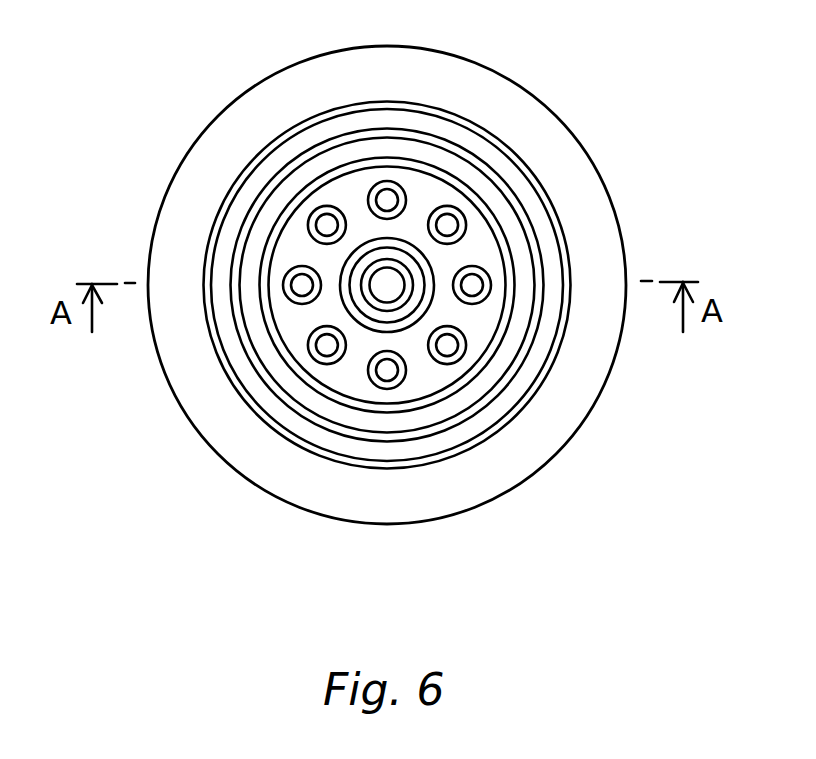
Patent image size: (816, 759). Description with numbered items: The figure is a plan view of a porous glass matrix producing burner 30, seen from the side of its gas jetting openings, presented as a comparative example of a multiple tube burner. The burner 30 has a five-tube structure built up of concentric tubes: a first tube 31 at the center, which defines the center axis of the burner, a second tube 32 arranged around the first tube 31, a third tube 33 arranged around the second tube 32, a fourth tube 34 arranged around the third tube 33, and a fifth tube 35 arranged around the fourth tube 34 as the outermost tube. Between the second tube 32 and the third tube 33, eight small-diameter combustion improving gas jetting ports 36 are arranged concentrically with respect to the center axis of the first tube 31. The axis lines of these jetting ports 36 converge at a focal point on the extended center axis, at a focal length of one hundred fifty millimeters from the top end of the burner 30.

The porous glass matrix producing burner 30 is at (173, 99).
The first tube 31 is at (405, 272).
The second tube 32 is at (427, 300).
The third tube 33 is at (458, 385).
The fourth tube 34 is at (431, 431).
The fifth tube 35 is at (348, 458).
The small-diameter combustion improving gas jetting ports 36 is at (310, 347).